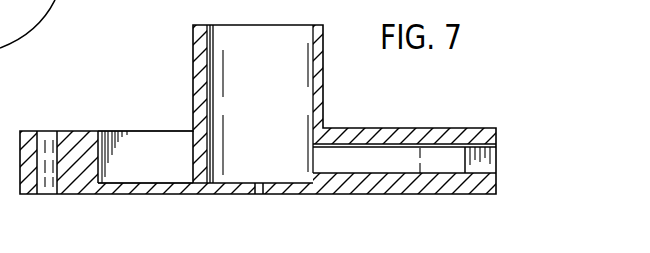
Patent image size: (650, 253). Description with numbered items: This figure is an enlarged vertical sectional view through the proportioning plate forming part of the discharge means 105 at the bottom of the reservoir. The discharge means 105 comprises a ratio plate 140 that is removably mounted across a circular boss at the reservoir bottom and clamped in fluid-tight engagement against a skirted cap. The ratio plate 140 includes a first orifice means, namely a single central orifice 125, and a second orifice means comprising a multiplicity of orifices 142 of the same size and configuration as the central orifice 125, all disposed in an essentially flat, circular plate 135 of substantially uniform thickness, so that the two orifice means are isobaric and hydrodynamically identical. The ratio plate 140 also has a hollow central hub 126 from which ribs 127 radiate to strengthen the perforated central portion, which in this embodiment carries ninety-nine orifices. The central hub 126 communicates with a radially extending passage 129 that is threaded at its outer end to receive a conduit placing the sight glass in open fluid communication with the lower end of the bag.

The discharge means 105 is at (108, 129).
The central orifice 125 is at (260, 183).
The hollow central hub 126 is at (317, 73).
The ribs 127 is at (175, 142).
The radially extending passage 129 is at (388, 153).
The circular plate 135 is at (460, 127).
The ratio plate 140 is at (133, 81).
The orifices 142 is at (150, 183).